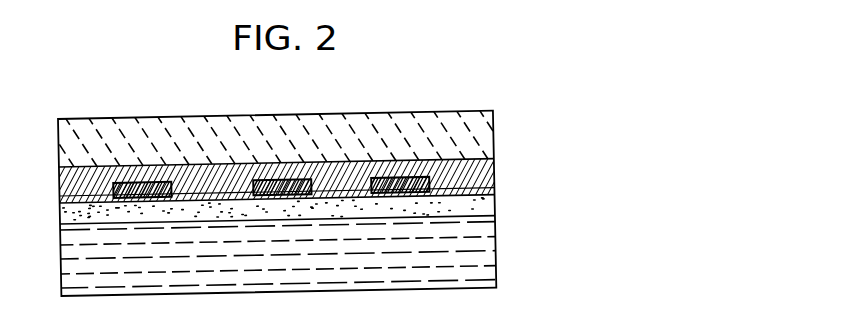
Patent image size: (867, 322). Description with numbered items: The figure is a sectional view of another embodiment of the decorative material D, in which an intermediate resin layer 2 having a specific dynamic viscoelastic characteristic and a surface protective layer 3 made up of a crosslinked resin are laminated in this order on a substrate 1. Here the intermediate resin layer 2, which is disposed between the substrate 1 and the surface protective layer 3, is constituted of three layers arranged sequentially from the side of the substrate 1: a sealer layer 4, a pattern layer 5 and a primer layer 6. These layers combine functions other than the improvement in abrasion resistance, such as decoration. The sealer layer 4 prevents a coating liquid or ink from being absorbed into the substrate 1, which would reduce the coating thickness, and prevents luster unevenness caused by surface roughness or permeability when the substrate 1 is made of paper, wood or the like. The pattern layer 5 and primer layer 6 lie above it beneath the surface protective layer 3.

The decorative material D is at (509, 92).
The substrate 1 is at (478, 241).
The intermediate resin layer 2 is at (357, 187).
The surface protective layer 3 is at (470, 131).
The sealer layer 4 is at (495, 203).
The pattern layer 5 is at (493, 189).
The primer layer 6 is at (493, 169).